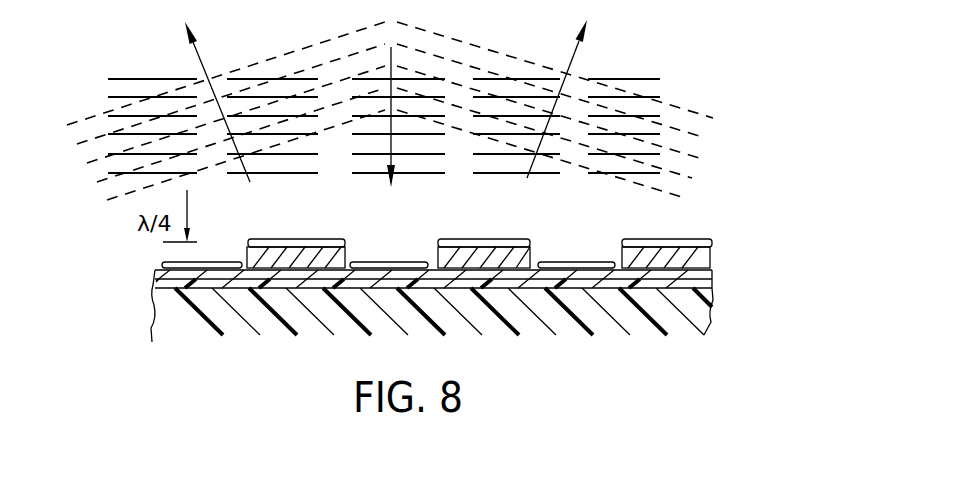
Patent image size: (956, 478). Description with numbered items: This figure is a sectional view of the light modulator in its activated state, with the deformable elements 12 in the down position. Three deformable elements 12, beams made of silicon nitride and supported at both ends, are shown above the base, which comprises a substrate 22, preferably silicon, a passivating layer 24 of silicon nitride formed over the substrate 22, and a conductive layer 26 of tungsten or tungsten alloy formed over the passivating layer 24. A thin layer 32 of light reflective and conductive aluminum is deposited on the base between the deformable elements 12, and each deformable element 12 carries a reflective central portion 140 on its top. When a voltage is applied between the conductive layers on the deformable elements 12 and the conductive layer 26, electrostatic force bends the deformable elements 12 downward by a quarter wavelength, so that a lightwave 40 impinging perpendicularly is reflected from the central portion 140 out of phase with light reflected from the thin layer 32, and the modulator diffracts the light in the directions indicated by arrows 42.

The deformable element 12 is at (713, 250).
The substrate 22 is at (705, 305).
The passivating layer 24 is at (713, 283).
The conductive layer 26 is at (713, 268).
The thin layer of light reflective and conductive material 32 is at (553, 262).
The lightwave 40 is at (688, 95).
The arrows 42 is at (198, 50).
The central portion 140 is at (683, 239).